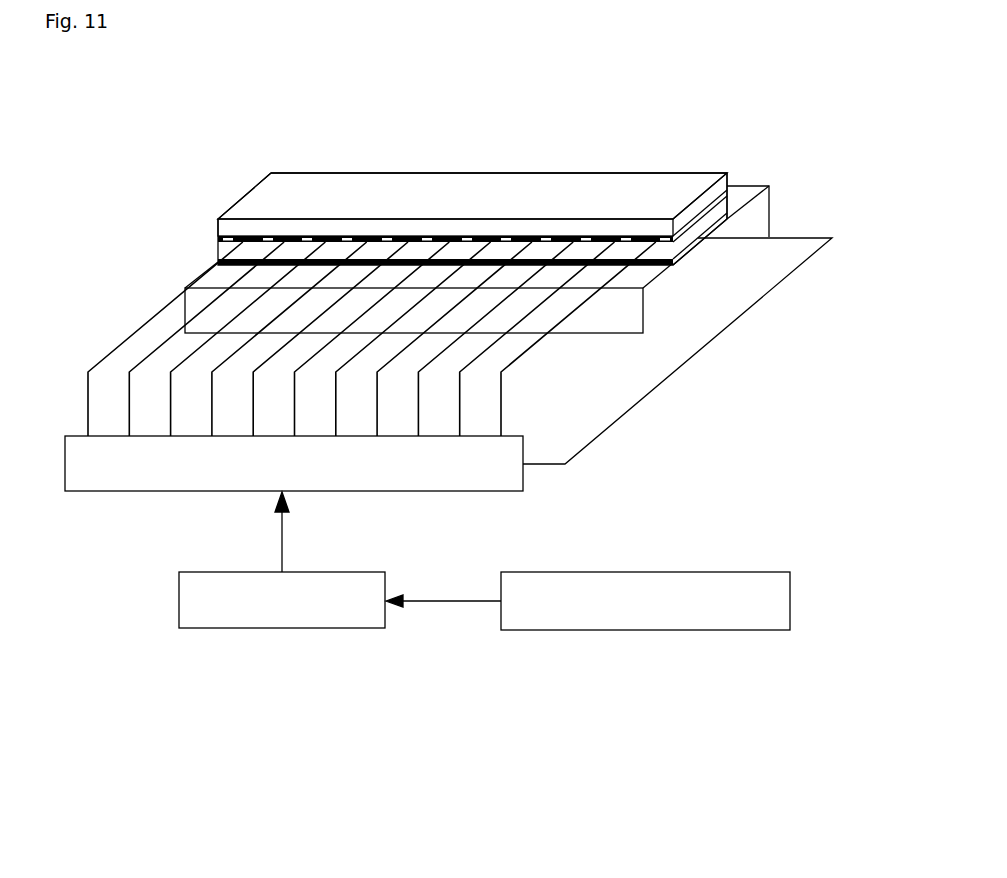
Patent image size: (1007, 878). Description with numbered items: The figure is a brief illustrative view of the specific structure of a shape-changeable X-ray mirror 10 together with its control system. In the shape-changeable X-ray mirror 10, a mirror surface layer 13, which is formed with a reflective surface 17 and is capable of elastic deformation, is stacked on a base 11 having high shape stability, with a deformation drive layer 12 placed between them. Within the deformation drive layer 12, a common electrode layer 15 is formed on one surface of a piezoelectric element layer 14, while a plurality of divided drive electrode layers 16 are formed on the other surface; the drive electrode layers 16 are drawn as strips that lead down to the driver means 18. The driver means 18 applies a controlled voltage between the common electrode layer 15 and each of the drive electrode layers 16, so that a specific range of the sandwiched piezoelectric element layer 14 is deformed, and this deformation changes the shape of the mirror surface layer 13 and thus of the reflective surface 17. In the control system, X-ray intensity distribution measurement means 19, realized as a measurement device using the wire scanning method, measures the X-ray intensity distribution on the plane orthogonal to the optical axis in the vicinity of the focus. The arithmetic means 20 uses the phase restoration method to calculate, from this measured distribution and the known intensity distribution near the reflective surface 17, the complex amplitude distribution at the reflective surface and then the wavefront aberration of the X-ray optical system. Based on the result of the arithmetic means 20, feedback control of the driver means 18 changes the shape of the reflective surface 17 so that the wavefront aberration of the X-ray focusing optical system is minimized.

The shape-changeable X-ray mirror 10 is at (312, 86).
The base 11 is at (817, 132).
The deformation drive layer 12 is at (135, 208).
The mirror surface layer 13 is at (577, 103).
The piezoelectric element layer 14 is at (727, 212).
The common electrode layer 15 is at (647, 268).
The drive electrode layer 16 is at (540, 240).
The reflective surface 17 is at (440, 192).
The driver means 18 is at (98, 553).
The X-ray intensity distribution measurement means 19 is at (593, 693).
The arithmetic means 20 is at (232, 692).